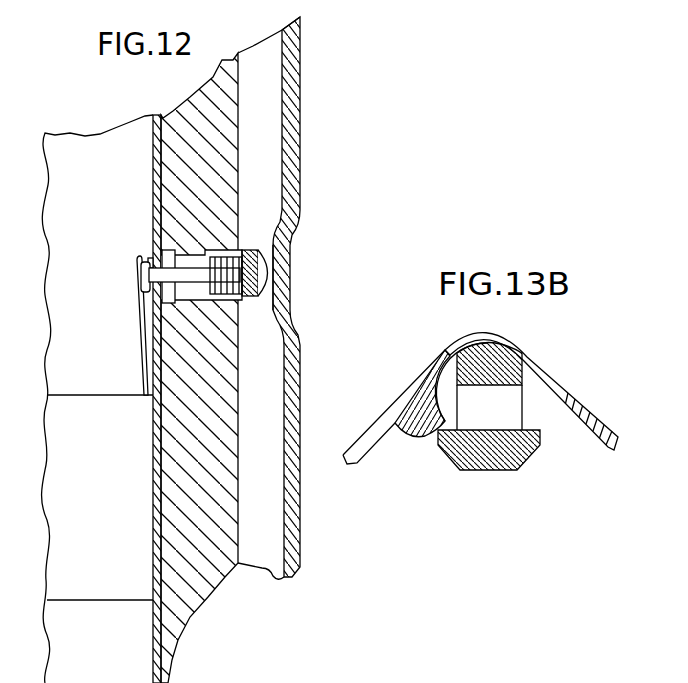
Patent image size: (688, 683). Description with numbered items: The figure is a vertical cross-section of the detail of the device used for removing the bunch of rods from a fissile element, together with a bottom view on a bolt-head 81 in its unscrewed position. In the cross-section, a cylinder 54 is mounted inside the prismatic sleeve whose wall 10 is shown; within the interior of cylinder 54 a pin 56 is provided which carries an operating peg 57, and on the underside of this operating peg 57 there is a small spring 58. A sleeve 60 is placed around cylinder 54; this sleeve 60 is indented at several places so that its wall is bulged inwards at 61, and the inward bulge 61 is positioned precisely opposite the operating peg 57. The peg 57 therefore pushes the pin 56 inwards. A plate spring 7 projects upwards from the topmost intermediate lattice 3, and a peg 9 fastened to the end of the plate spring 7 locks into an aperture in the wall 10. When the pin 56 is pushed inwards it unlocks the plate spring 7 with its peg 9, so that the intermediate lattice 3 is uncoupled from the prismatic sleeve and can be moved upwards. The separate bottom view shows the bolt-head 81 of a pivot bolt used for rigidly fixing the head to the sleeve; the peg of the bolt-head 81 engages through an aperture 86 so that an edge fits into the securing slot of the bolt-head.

In FIG. 12, the intermediate lattice 3 is at (97, 399).
In FIG. 12, the plate spring 7 is at (137, 316).
In FIG. 12, the peg 9 is at (152, 262).
In FIG. 12, the wall 10 is at (153, 655).
In FIG. 13B, the wall 10 is at (592, 430).
In FIG. 12, the cylinder 54 is at (217, 392).
In FIG. 12, the pin 56 is at (216, 252).
In FIG. 12, the operating peg 57 is at (273, 263).
In FIG. 12, the small spring 58 is at (243, 302).
In FIG. 12, the sleeve 60 is at (300, 129).
In FIG. 12, the inward bulge 61 is at (288, 298).
In FIG. 13B, the bolt-head 81 is at (505, 407).
In FIG. 13B, the aperture 86 is at (550, 373).